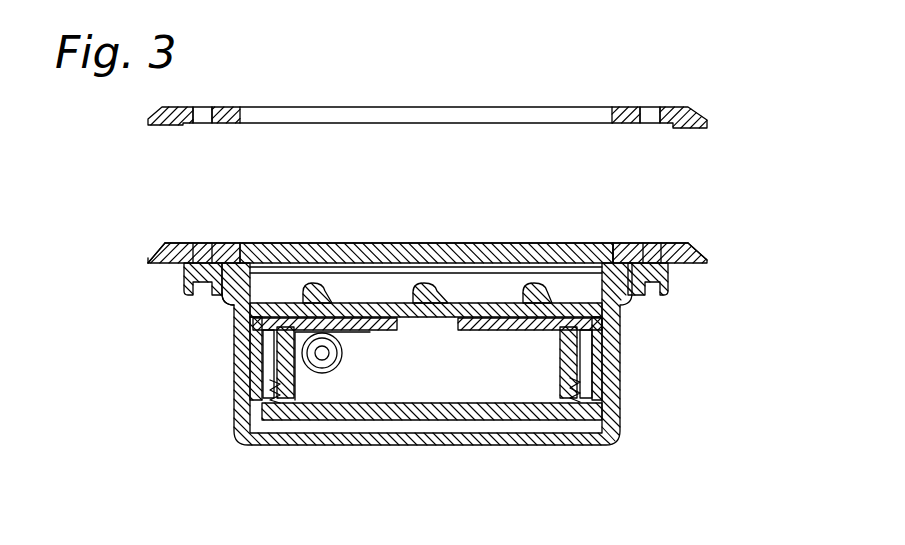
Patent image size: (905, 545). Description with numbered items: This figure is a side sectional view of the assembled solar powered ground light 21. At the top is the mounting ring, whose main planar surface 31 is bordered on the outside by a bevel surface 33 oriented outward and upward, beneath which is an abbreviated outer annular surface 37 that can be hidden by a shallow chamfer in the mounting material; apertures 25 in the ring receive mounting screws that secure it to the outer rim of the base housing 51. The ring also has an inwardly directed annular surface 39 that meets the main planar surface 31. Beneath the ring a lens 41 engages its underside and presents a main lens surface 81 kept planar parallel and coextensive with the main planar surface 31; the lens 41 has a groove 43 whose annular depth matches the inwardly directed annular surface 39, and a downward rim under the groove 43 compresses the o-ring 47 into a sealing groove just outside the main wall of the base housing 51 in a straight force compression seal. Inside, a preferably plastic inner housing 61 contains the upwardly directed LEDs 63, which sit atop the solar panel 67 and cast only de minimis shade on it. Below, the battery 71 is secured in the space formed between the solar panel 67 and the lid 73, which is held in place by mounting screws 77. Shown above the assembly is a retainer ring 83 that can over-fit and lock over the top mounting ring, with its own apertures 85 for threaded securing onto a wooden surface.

The solar powered ground light 21 is at (124, 195).
The apertures 25 is at (415, 303).
The main planar surface 31 is at (205, 245).
The bevel surface 33 is at (160, 247).
The abbreviated outer annular surface 37 is at (146, 261).
The inwardly directed annular surface 39 is at (257, 245).
The lens 41 is at (560, 247).
The groove 43 is at (230, 258).
The o-ring 47 is at (213, 297).
The base housing 51 is at (235, 322).
The inner housing 61 is at (273, 326).
The LEDs 63 is at (527, 285).
The solar panel 67 is at (378, 306).
The battery 71 is at (322, 373).
The lid 73 is at (480, 425).
The mounting screws 77 is at (240, 394).
The main lens surface 81 is at (518, 246).
The retainer ring 83 is at (461, 83).
The apertures 85 is at (650, 119).